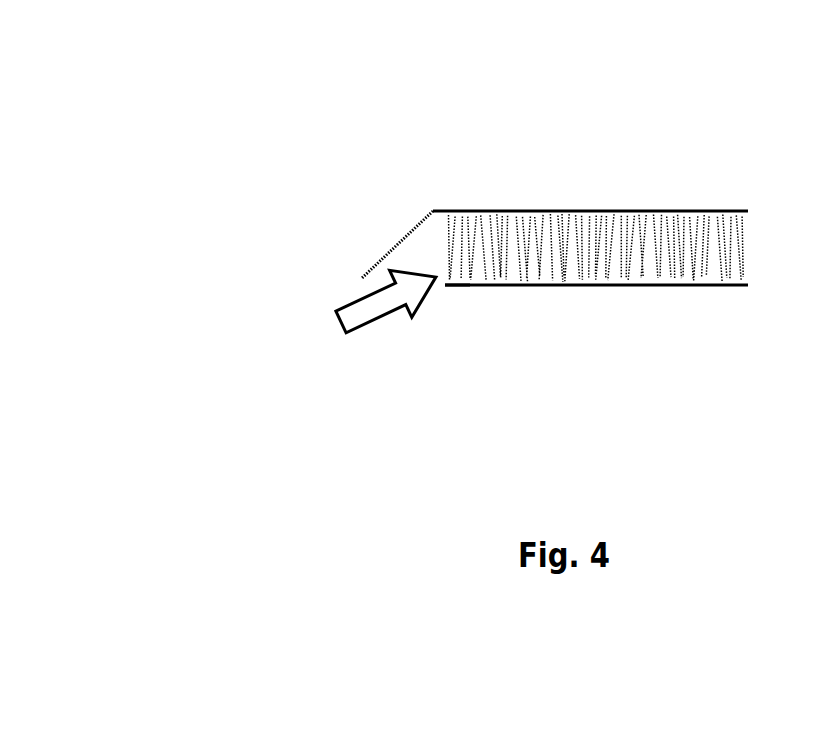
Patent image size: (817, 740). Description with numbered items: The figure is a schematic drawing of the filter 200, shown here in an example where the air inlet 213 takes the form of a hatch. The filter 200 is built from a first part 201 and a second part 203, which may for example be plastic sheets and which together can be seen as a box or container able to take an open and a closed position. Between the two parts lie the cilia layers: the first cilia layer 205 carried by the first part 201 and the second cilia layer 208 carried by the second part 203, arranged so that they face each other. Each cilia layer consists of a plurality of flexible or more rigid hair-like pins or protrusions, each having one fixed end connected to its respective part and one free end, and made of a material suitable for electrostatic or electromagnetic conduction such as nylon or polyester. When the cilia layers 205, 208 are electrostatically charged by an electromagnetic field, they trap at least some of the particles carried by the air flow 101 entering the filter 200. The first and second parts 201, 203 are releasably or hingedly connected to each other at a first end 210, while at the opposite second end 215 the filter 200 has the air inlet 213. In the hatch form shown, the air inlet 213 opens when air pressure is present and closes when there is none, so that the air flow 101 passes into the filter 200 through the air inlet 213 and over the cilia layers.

The filter 200 is at (148, 103).
The first part 201 is at (630, 285).
The second part 203 is at (535, 160).
The first cilia layer 205 is at (698, 180).
The second cilia layer 208 is at (588, 217).
The first end 210 is at (748, 237).
The air inlet 213 is at (420, 222).
The second end 215 is at (445, 285).
The air flow 101 is at (386, 301).